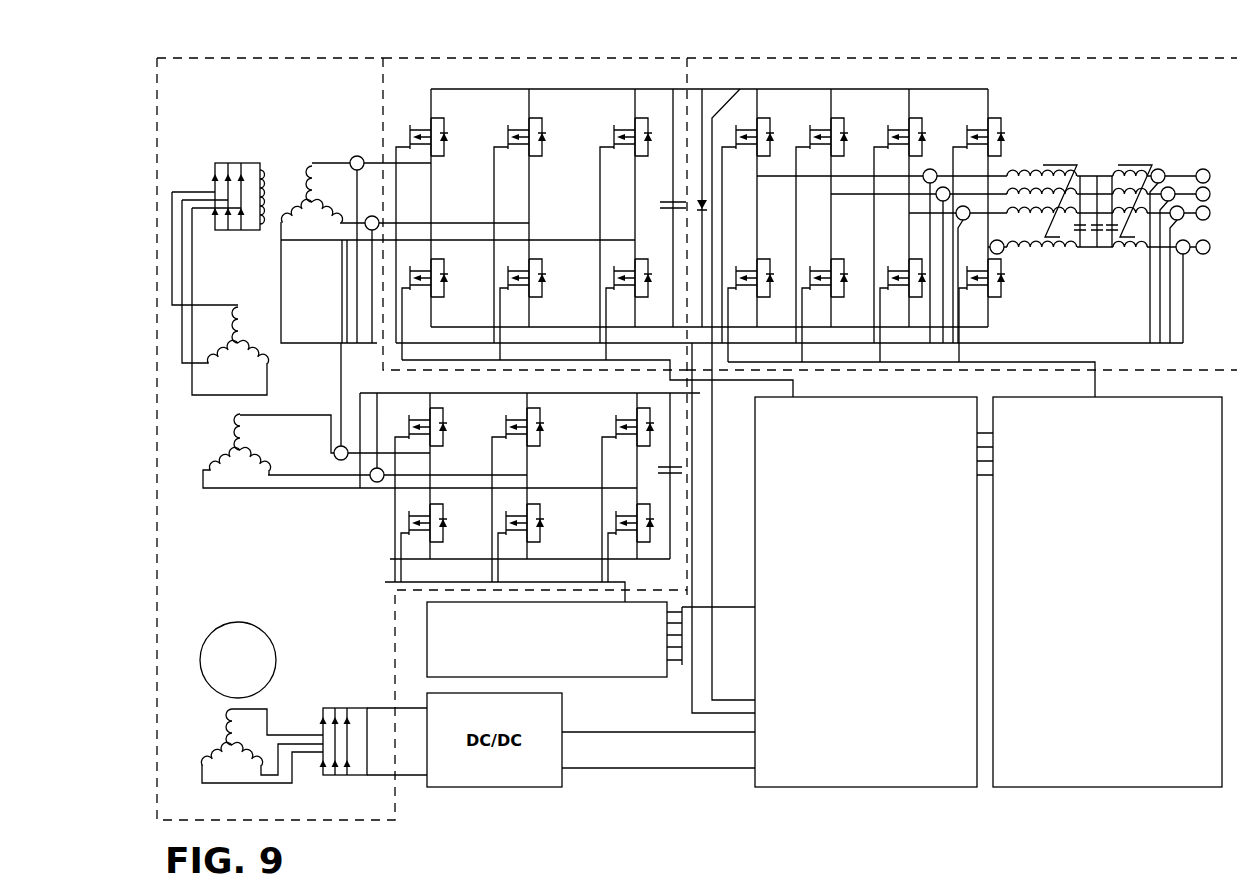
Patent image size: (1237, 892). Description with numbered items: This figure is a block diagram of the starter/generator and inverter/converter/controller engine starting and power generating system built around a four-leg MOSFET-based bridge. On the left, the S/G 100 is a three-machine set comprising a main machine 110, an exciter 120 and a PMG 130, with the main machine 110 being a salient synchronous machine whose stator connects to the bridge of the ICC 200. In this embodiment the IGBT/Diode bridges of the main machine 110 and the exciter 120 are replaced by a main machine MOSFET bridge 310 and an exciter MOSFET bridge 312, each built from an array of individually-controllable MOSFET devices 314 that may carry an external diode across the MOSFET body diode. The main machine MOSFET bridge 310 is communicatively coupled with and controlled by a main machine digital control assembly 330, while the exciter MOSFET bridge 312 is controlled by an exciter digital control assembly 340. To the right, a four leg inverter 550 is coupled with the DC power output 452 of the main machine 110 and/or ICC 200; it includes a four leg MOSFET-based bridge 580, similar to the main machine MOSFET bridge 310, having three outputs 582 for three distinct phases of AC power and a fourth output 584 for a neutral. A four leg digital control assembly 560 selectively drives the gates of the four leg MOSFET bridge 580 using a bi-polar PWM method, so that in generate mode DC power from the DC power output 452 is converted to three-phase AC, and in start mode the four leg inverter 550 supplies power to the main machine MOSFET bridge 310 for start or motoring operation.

The S/G 100 is at (243, 55).
The main machine 110 is at (330, 160).
The exciter 120 is at (236, 160).
The PMG 130 is at (240, 620).
The ICC 200 is at (428, 55).
The main machine MOSFET bridge 310 is at (568, 86).
The exciter MOSFET bridge 312 is at (568, 420).
The MOSFET devices 314 is at (495, 138).
The main machine digital control assembly 330 is at (876, 433).
The exciter digital control assembly 340 is at (660, 638).
The DC power output 452 is at (650, 86).
The four leg inverter 550 is at (872, 55).
The four leg digital control assembly 560 is at (1121, 433).
The four leg MOSFET-based bridge 580 is at (940, 100).
The three outputs 582 is at (1062, 152).
The fourth output 584 is at (1050, 252).